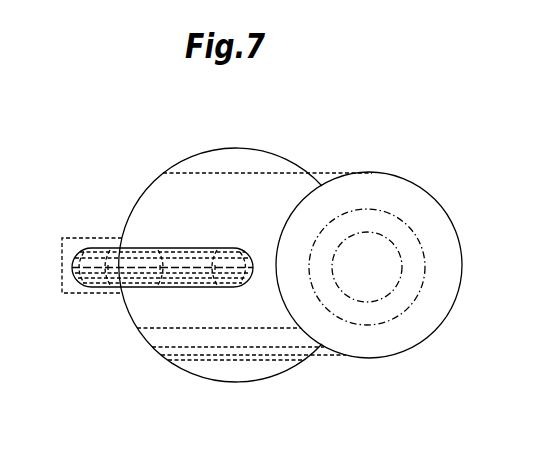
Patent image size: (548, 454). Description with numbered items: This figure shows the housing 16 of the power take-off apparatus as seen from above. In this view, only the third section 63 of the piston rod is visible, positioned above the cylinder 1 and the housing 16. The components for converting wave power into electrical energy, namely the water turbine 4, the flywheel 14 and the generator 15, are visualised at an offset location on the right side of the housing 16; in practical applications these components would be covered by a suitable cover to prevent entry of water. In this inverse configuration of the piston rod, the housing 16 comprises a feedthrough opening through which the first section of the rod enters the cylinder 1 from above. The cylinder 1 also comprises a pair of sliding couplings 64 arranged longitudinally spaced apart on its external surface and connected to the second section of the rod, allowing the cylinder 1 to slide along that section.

The cylinder 1 is at (222, 153).
The housing 16 is at (155, 217).
The water turbine 4 is at (396, 233).
The flywheel 14 is at (397, 222).
The generator 15 is at (382, 280).
The third section 63 is at (160, 267).
The sliding couplings 64 is at (72, 284).